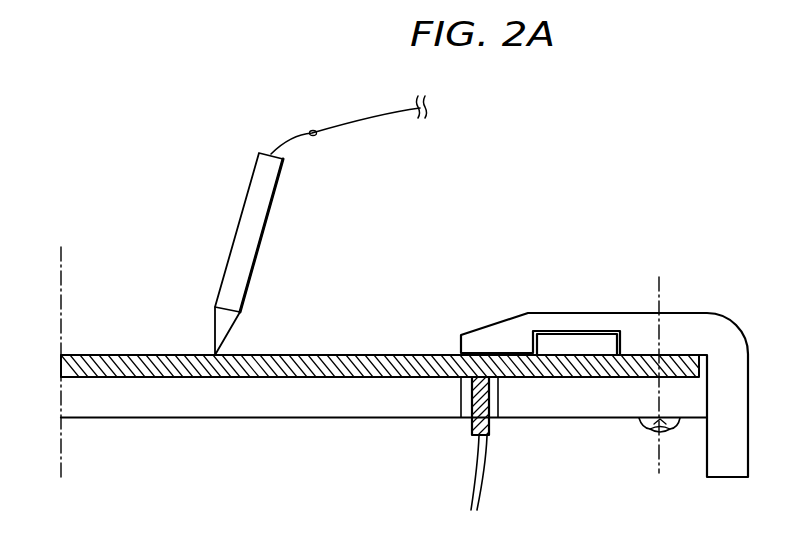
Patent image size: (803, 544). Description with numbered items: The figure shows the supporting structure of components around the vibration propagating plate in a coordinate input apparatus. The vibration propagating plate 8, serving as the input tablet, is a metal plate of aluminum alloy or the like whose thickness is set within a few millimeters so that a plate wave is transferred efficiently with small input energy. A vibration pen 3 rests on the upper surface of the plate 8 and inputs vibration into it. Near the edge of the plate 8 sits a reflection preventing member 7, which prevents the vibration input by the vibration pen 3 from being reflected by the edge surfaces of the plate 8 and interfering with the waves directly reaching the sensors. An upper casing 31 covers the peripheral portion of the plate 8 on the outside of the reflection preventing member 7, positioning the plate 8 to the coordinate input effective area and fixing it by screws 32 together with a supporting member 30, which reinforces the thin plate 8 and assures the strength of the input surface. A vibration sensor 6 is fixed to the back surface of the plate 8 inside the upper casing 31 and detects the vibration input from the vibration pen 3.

The vibration pen 3 is at (277, 184).
The vibration propagating plate 8 is at (357, 355).
The supporting member 30 is at (331, 418).
The upper casing 31 is at (540, 313).
The reflection preventing member 7 is at (603, 334).
The vibration sensor 6 is at (490, 428).
The screw 32 is at (640, 425).